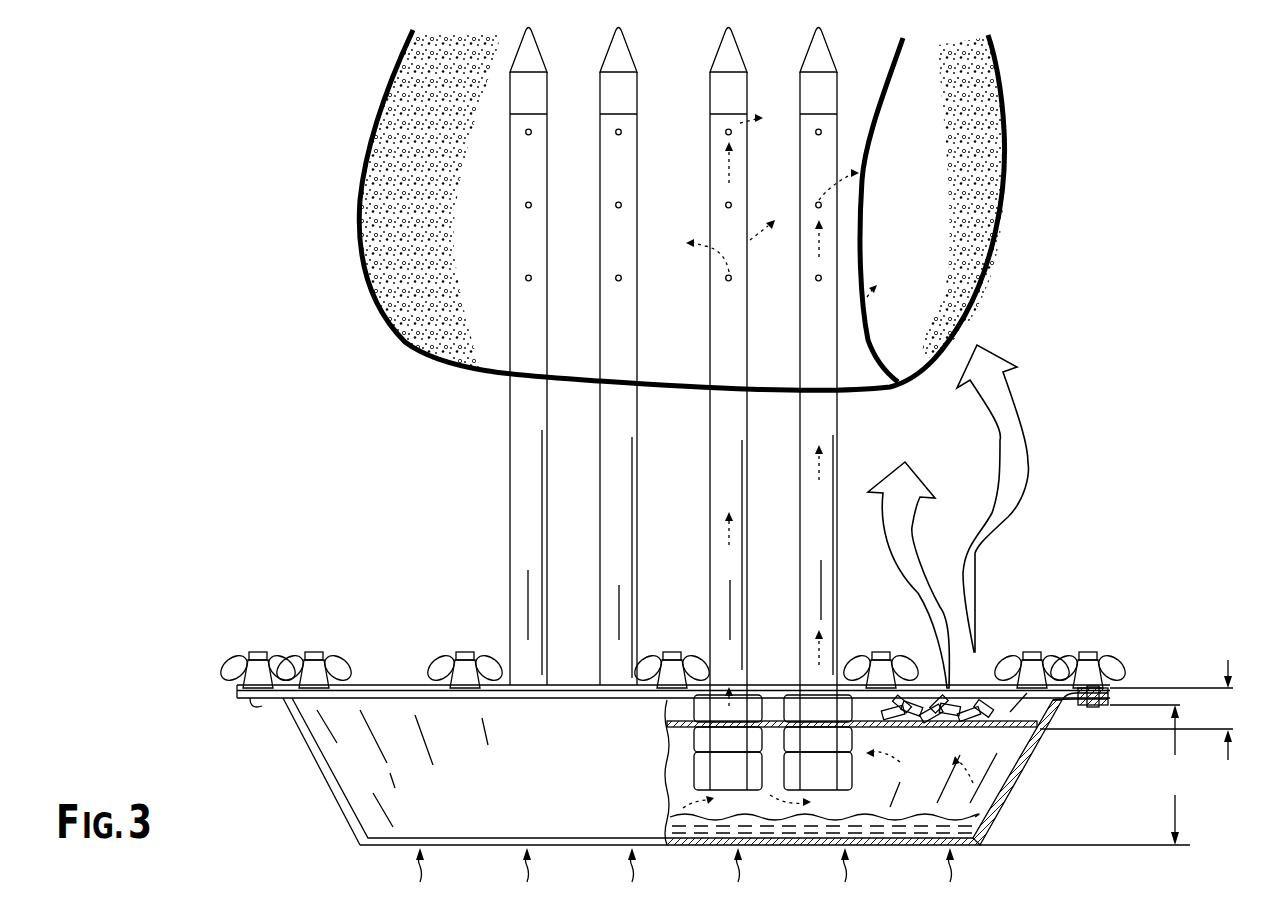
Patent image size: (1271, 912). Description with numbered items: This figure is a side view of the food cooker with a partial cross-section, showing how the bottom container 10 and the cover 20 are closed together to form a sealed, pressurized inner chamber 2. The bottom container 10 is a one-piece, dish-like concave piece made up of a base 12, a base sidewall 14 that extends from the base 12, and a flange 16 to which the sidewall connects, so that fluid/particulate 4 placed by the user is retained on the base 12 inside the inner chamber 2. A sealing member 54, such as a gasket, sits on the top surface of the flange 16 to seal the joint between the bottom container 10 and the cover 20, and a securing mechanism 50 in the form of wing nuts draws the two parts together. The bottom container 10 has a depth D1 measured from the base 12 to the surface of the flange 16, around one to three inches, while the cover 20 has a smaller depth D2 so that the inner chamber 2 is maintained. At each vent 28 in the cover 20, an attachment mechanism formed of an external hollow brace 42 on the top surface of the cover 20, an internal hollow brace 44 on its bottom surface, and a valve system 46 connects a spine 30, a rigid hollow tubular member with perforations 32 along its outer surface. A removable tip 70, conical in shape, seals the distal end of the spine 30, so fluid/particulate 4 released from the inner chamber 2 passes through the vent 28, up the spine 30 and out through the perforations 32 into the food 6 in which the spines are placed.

The inner chamber 2 is at (995, 755).
The fluid/particulate 4 is at (977, 706).
The food 6 is at (1006, 172).
The bottom container 10 is at (350, 845).
The base 12 is at (440, 842).
The base sidewall 14 is at (313, 763).
The flange 16 is at (237, 698).
The cover 20 is at (237, 685).
The vent 28 is at (763, 700).
The spine 30 is at (515, 540).
The perforations 32 is at (621, 207).
The external hollow brace 42 is at (693, 710).
The internal hollow brace 44 is at (693, 738).
The valve system 46 is at (693, 777).
The securing mechanism 50 is at (225, 658).
The sealing member 54 is at (253, 708).
The tip 70 is at (824, 46).
The depth D1 is at (1088, 775).
The depth D2 is at (1145, 710).